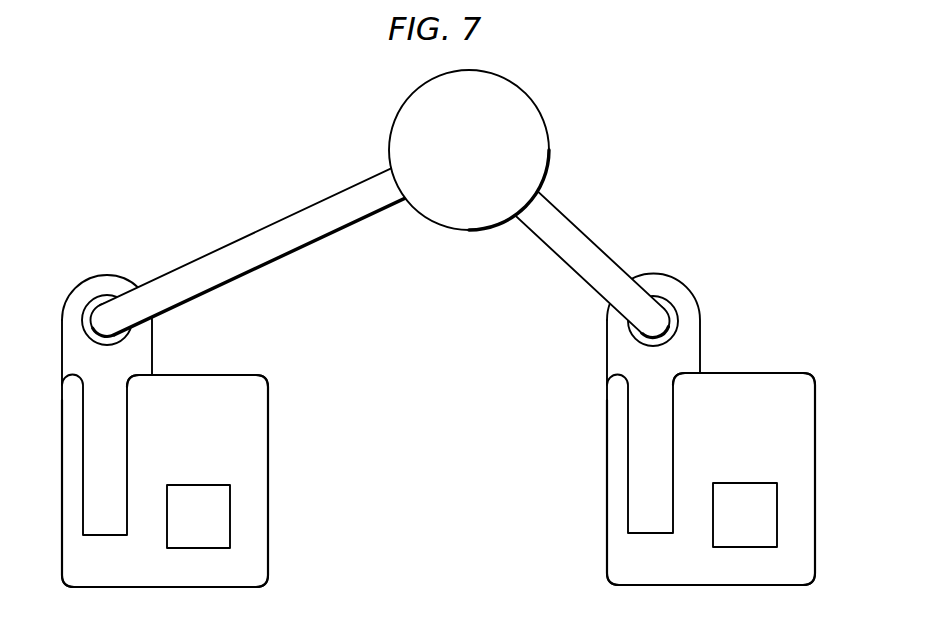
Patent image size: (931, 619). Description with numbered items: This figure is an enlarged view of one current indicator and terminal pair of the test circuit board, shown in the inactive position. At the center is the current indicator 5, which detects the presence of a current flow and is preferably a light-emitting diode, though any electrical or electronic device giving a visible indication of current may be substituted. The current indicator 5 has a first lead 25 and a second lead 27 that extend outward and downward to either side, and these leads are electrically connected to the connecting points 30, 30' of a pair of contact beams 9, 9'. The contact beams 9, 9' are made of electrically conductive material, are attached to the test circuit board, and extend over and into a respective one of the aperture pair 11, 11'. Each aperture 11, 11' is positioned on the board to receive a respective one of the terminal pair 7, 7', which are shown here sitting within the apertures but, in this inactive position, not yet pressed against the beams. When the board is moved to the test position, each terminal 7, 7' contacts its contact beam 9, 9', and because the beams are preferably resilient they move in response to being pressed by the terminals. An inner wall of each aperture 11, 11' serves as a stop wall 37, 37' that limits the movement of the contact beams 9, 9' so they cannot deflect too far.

The current indicator 5 is at (545, 123).
The first lead 25 is at (278, 240).
The second lead 27 is at (588, 242).
The connecting point 30 is at (666, 291).
The connecting point 30' is at (96, 291).
The contact beam 9 is at (664, 454).
The contact beam 9' is at (119, 455).
The aperture 11 is at (739, 479).
The aperture 11' is at (195, 481).
The terminal 7 is at (779, 515).
The terminal 7' is at (234, 516).
The stop wall 37 is at (711, 430).
The stop wall 37' is at (165, 431).